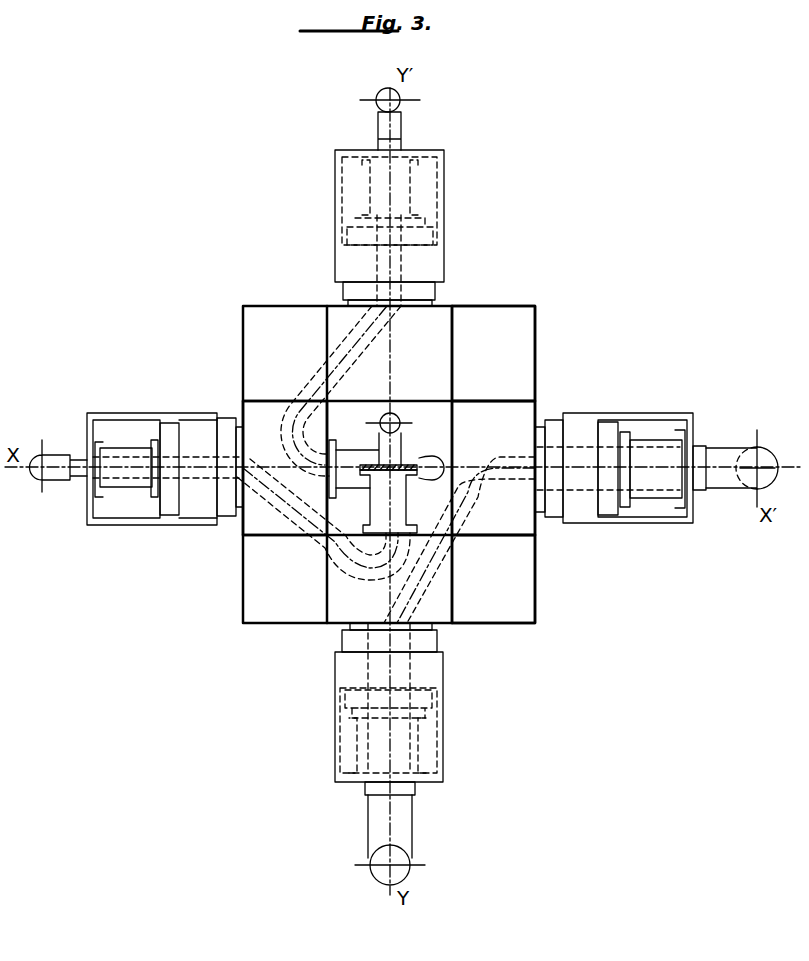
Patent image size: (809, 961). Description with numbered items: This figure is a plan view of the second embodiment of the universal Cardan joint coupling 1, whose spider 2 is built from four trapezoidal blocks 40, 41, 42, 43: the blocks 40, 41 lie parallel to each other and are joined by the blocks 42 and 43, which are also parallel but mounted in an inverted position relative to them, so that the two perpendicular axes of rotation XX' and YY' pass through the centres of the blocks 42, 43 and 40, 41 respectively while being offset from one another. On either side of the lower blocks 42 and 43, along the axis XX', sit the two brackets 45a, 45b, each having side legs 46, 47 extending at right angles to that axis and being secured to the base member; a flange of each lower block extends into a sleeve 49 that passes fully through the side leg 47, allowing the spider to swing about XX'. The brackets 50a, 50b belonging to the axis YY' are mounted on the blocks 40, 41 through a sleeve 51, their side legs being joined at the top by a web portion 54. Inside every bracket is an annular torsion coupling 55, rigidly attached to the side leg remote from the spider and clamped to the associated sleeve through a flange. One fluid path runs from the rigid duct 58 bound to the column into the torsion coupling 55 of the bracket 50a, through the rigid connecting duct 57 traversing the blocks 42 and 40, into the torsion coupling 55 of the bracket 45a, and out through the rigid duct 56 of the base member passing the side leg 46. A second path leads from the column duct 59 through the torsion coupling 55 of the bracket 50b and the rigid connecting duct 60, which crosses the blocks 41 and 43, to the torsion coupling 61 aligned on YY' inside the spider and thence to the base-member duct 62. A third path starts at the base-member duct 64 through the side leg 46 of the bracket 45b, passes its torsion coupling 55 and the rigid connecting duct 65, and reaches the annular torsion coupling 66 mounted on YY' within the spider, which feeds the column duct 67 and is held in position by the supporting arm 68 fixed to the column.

The universal Cardan joint coupling 1 is at (211, 626).
The spider 2 is at (524, 329).
The trapezoidal block 40 is at (512, 612).
The trapezoidal block 41 is at (488, 326).
The trapezoidal block 42 is at (513, 413).
The trapezoidal block 43 is at (256, 415).
The bracket 45a is at (662, 532).
The bracket 45b is at (142, 408).
The side leg 46 is at (103, 423).
The side leg 47 is at (198, 440).
The sleeve 49 is at (170, 520).
The bracket 50a is at (328, 720).
The bracket 50b is at (452, 186).
The sleeve 51 is at (438, 237).
The web portion 54 is at (356, 195).
The annular torsion coupling 55 is at (410, 187).
The rigid duct 56 is at (726, 458).
The rigid connecting duct 57 is at (493, 522).
The rigid duct 58 is at (377, 883).
The rigid duct 59 is at (372, 92).
The rigid connecting duct 60 is at (345, 350).
The torsion coupling 61 is at (350, 455).
The rigid duct 62 is at (444, 466).
The rigid duct 64 is at (60, 457).
The rigid connecting duct 65 is at (312, 545).
The annular torsion coupling 66 is at (383, 498).
The rigid duct 67 is at (399, 415).
The supporting arm 68 is at (406, 464).